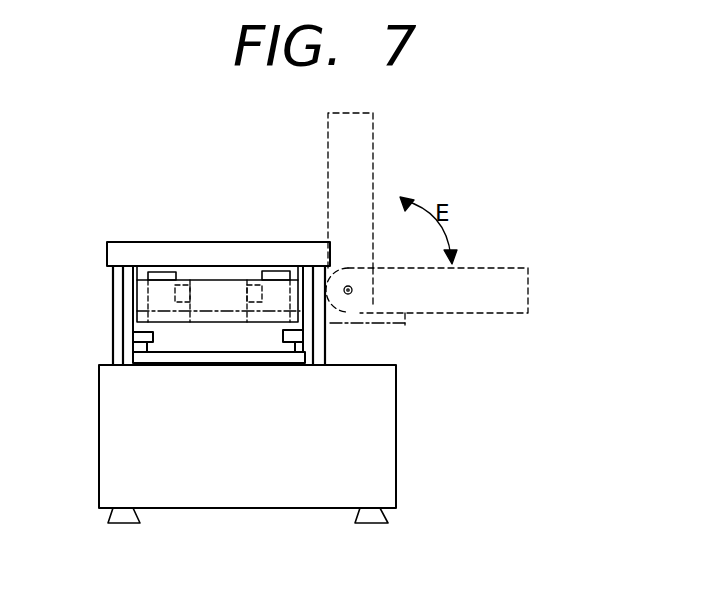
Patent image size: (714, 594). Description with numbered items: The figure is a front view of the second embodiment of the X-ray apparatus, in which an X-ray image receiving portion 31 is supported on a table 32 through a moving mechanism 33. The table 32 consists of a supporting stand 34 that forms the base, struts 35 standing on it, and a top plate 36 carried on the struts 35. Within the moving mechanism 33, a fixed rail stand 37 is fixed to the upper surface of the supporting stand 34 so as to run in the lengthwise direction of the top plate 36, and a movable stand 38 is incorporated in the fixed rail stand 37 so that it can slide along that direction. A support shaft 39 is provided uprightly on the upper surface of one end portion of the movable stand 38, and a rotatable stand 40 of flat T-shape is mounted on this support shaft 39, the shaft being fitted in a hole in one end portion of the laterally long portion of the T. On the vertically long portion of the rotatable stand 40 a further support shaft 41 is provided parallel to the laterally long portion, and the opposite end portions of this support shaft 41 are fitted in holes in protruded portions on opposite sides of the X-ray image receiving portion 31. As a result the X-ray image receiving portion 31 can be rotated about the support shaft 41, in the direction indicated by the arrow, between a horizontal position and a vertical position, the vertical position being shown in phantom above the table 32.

The X-ray image receiving portion 31 is at (222, 266).
The table 32 is at (147, 234).
The moving mechanism 33 is at (117, 306).
The supporting stand 34 is at (396, 417).
The struts 35 is at (326, 343).
The top plate 36 is at (305, 251).
The fixed rail stand 37 is at (155, 358).
The movable stand 38 is at (157, 336).
The support shaft 39 is at (275, 270).
The rotatable stand 40 is at (136, 288).
The support shaft 41 is at (352, 292).